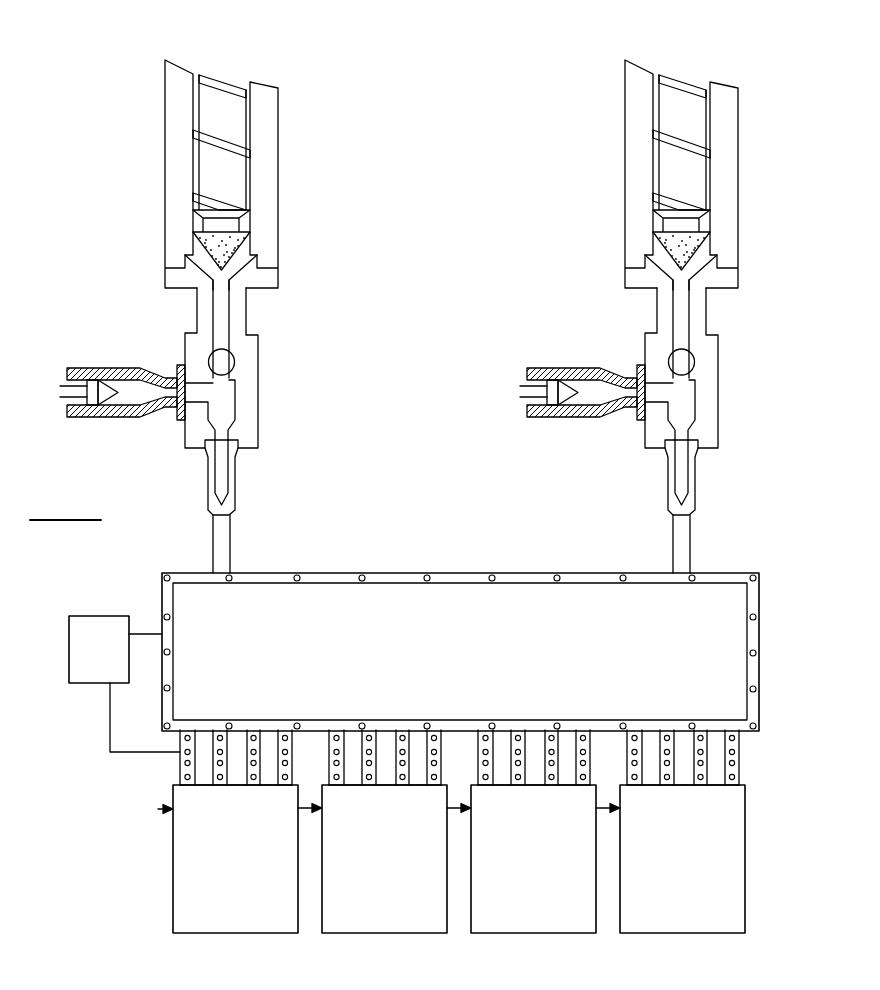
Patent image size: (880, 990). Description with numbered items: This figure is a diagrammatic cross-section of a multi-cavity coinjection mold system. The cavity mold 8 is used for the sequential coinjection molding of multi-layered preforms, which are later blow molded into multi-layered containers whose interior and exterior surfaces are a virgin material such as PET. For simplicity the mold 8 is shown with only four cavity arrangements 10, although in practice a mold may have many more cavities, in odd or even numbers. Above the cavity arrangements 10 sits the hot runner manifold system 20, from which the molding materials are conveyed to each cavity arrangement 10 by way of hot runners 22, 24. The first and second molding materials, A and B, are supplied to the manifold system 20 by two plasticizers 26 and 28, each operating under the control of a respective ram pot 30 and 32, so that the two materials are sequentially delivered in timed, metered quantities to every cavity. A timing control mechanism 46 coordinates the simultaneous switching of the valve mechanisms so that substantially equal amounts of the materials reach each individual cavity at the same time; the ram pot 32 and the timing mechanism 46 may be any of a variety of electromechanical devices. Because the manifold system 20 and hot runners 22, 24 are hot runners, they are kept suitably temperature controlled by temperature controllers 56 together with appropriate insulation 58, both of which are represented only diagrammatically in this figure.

The cavity mold 8 is at (737, 565).
The cavity arrangement 10 is at (250, 872).
The hot runner manifold system 20 is at (475, 666).
The hot runner 22 is at (203, 777).
The hot runner 24 is at (265, 764).
The plasticizer 26 is at (268, 178).
The plasticizer 28 is at (728, 178).
The ram pot 30 is at (132, 383).
The ram pot 32 is at (592, 383).
The timing control mechanism 46 is at (158, 809).
The temperature controller 56 is at (113, 662).
The insulation 58 is at (188, 572).